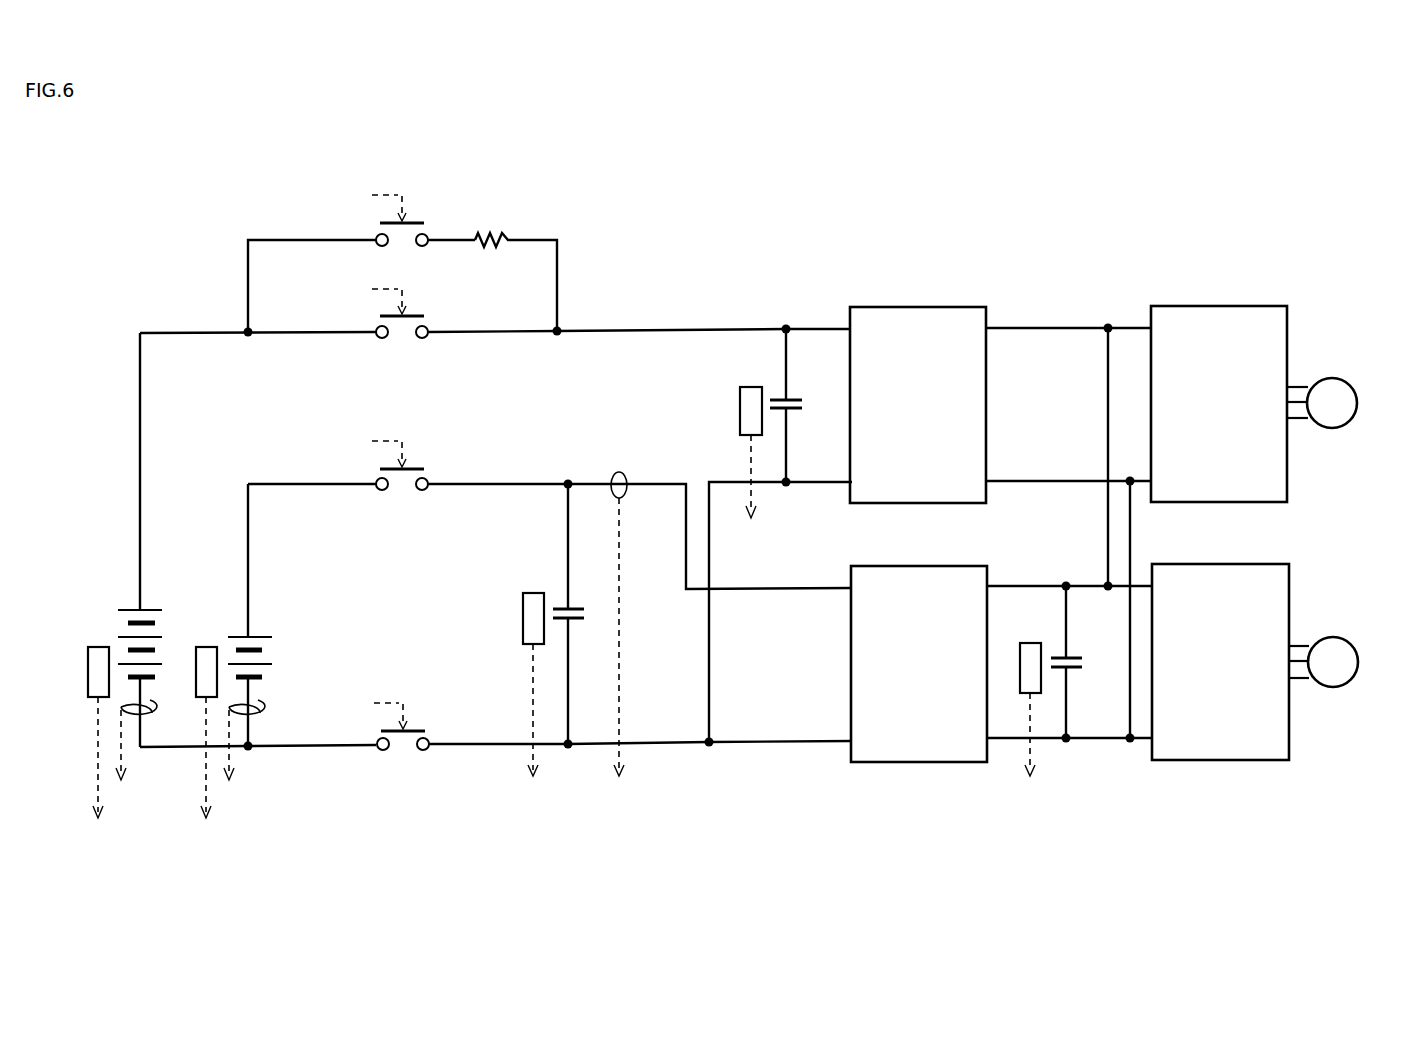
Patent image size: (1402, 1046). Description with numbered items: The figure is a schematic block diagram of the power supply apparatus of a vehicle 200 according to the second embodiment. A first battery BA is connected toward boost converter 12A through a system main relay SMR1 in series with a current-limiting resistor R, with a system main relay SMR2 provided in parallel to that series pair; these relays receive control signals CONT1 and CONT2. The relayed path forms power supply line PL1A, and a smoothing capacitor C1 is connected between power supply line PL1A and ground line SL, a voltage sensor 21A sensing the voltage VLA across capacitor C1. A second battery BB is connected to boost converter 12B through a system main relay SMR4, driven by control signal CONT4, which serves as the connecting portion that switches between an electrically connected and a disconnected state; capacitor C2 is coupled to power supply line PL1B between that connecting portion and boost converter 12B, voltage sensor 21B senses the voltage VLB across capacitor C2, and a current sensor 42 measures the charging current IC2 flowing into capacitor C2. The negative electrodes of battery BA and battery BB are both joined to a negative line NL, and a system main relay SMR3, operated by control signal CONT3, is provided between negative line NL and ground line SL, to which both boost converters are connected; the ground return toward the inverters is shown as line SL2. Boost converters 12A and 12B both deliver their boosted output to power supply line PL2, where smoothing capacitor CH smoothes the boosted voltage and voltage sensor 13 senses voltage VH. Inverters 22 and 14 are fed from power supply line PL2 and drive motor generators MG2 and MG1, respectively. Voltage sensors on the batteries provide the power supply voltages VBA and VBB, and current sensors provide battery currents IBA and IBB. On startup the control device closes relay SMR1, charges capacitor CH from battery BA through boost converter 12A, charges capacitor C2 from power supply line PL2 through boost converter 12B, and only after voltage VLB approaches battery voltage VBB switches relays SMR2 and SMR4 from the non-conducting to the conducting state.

The vehicle 200 is at (142, 146).
The control signal for SMR1 CONT1 is at (347, 203).
The control signal for SMR2 CONT2 is at (347, 296).
The control signal for SMR3 CONT3 is at (348, 710).
The control signal for SMR4 CONT4 is at (347, 448).
The system main relay SMR1 is at (402, 243).
The system main relay SMR2 is at (414, 316).
The system main relay SMR3 is at (414, 731).
The system main relay SMR4 is at (414, 469).
The resistor R is at (505, 236).
The power supply line PL1A is at (628, 330).
The power supply line PL1B is at (668, 483).
The power supply line PL2 is at (1124, 326).
The negative line NL is at (290, 747).
The ground line SL is at (681, 744).
The ground line SL2 is at (1069, 610).
The current sensor 42 is at (617, 472).
The charging current IC2 is at (616, 654).
The voltage sensor 21A is at (751, 386).
The voltage sensor 21B is at (533, 593).
The voltage sensor 13 is at (1032, 643).
The smoothing capacitor C1 is at (795, 408).
The smoothing capacitor C2 is at (576, 619).
The smoothing capacitor CH is at (1073, 668).
The voltage VLA is at (746, 493).
The voltage VLB is at (528, 727).
The voltage VH is at (1028, 749).
The battery BA is at (132, 609).
The battery BB is at (240, 637).
The current sensor / current value IBA is at (133, 757).
The current sensor / current value IBB is at (241, 757).
The power supply voltage VBA is at (94, 749).
The power supply voltage VBB is at (202, 749).
The boost converter 12A is at (918, 307).
The boost converter 12B is at (920, 762).
The inverter 22 is at (1217, 306).
The inverter 14 is at (1219, 760).
The motor generator MG1 is at (1331, 637).
The motor generator MG2 is at (1330, 378).